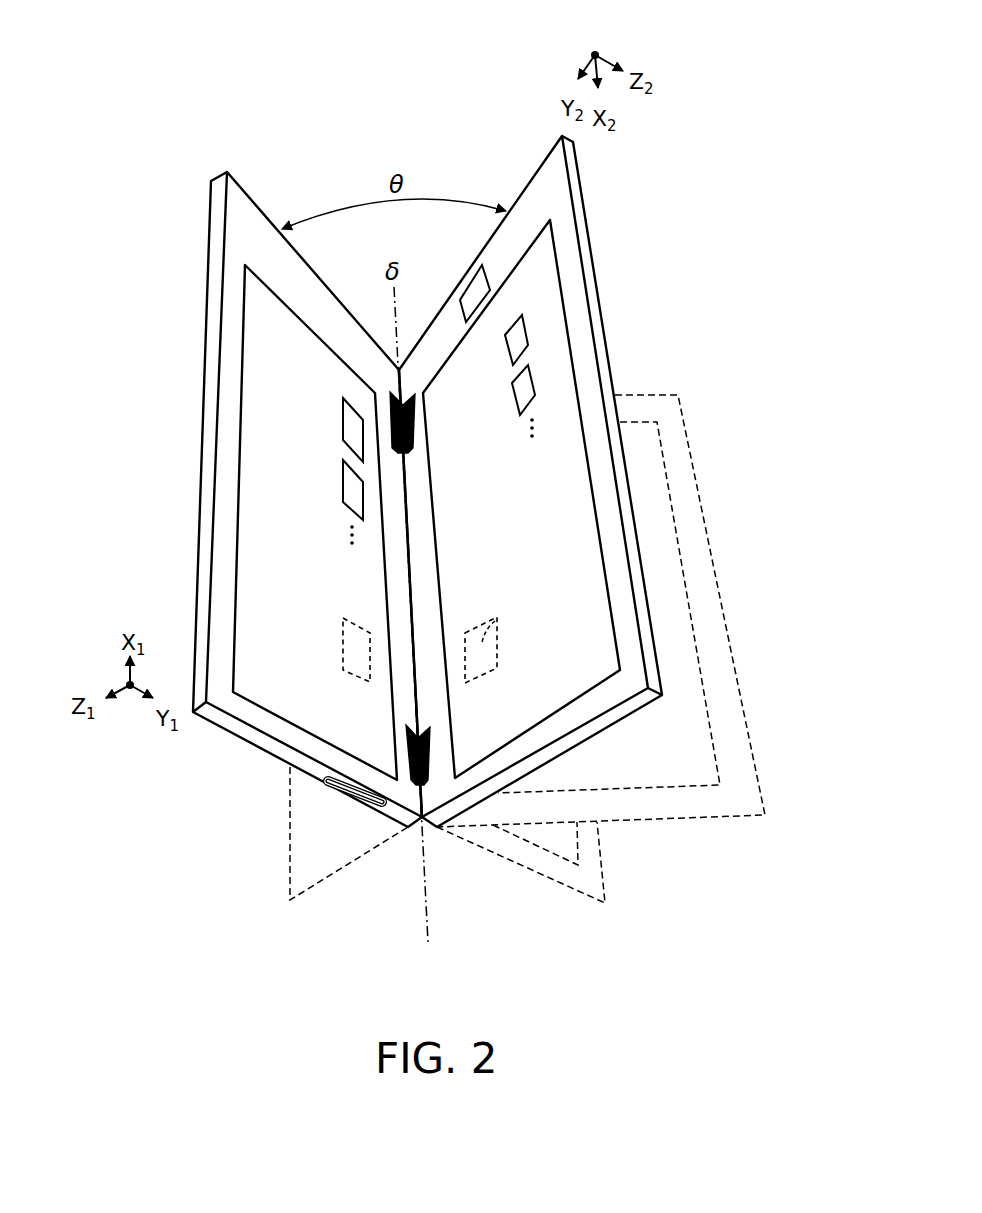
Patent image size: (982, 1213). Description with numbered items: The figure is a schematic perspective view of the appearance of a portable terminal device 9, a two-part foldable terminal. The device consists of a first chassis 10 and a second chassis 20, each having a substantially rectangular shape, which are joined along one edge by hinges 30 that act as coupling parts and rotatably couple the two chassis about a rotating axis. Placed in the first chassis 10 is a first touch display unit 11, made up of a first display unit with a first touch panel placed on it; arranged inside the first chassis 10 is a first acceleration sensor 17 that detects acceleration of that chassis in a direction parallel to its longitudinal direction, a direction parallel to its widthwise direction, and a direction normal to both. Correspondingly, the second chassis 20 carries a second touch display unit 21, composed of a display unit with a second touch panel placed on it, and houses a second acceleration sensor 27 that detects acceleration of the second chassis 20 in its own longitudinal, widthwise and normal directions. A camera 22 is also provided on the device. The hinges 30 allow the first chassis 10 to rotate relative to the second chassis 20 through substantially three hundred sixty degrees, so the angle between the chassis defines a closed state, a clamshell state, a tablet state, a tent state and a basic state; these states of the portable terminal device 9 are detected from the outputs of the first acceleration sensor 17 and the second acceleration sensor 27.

The portable terminal device 9 is at (189, 72).
The first chassis 10 is at (192, 331).
The first touch display unit 11 is at (253, 595).
The first acceleration sensor 17 is at (350, 656).
The second chassis 20 is at (602, 247).
The second touch display unit 21 is at (543, 342).
The camera 22 is at (470, 293).
The second acceleration sensor 27 is at (497, 618).
The hinges 30 is at (417, 432).